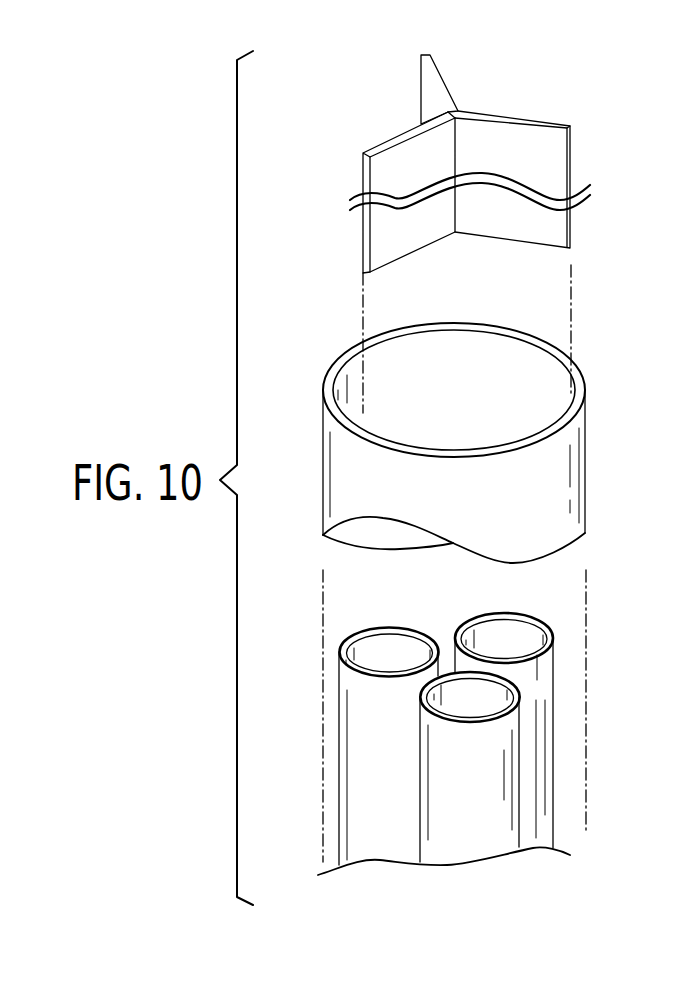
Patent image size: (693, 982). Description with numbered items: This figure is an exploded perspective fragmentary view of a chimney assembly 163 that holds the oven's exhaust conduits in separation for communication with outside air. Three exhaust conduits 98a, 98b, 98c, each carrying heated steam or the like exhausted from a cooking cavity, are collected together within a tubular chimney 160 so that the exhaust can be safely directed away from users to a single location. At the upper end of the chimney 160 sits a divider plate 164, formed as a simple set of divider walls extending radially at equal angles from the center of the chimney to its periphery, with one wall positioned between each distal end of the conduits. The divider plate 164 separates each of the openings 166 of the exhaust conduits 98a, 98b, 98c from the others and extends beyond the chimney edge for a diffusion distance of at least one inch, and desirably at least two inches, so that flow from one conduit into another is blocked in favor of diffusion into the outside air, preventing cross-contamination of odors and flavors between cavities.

The divider assembly 163 is at (499, 234).
The divider plate 164 is at (525, 142).
The tubular chimney 160 is at (552, 477).
The openings of the exhaust conduits 166 is at (505, 630).
The exhaust conduit 98a is at (445, 843).
The exhaust conduit 98b is at (533, 687).
The exhaust conduit 98c is at (360, 722).